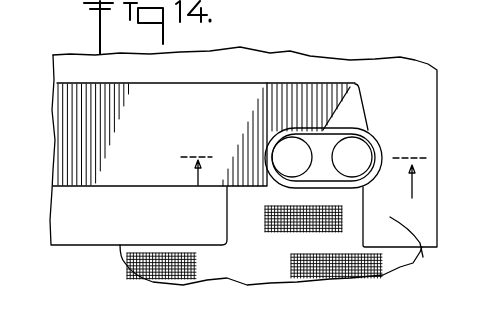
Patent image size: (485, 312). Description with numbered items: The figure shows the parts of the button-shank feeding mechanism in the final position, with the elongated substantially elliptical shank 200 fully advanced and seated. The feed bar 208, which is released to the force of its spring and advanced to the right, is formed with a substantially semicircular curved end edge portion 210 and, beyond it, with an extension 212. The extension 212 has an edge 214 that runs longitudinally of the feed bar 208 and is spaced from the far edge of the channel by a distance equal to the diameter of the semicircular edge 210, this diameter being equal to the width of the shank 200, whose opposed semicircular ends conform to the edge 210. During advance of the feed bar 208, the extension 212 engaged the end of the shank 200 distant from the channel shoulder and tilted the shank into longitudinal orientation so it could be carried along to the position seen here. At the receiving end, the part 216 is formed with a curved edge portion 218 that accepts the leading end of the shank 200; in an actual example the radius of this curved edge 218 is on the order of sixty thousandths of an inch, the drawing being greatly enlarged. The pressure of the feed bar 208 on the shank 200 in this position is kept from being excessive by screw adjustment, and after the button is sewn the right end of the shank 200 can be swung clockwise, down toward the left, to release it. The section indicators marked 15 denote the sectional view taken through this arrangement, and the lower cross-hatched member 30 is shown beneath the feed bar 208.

The feed bar 208 is at (73, 142).
The semicircular curved end edge portion 210 is at (274, 150).
The extension 212 is at (330, 100).
The edge 214 is at (301, 130).
The curved edge portion 218 is at (362, 148).
The shank 200 is at (293, 184).
The part 216 is at (423, 257).
The base 30 is at (173, 271).
The section line 15- 15 is at (304, 163).